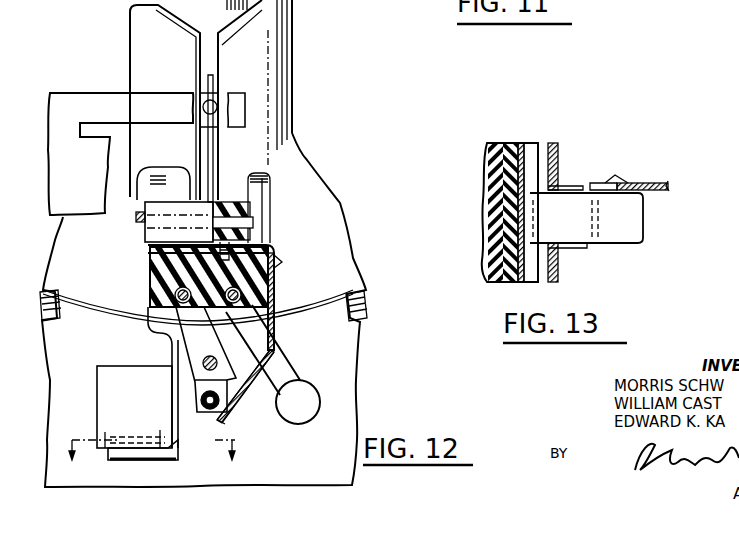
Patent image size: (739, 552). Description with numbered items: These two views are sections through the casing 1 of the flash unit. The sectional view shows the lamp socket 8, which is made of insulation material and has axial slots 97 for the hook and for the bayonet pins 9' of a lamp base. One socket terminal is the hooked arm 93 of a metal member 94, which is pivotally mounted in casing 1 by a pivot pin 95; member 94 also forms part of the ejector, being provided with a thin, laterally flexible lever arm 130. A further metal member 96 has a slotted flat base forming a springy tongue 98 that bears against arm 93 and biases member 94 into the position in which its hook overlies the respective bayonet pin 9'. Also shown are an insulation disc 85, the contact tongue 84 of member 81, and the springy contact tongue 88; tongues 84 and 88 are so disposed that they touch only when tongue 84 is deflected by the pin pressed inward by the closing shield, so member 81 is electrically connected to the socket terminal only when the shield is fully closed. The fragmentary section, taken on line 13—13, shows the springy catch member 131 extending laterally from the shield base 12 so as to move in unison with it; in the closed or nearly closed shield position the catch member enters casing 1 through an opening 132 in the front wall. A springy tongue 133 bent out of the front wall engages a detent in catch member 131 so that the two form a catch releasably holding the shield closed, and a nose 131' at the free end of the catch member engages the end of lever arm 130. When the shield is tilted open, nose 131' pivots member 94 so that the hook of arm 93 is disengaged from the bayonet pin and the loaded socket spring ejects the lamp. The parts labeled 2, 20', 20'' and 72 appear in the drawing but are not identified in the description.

In FIG. 13, the casing 1 is at (561, 162).
In FIG. 12, the housing body 2 is at (335, 252).
In FIG. 12, the lamp socket 8 is at (295, 91).
In FIG. 12, the bayonet pin 9' is at (263, 77).
In FIG. 13, the shield portion 12 is at (486, 180).
In FIG. 12, the layer / section line 13 is at (152, 439).
In FIG. 13, the layer / section line 13 is at (515, 145).
In FIG. 12, the fastener 20' is at (179, 277).
In FIG. 12, the fastener 20'' is at (277, 282).
In FIG. 12, the knob 72 is at (280, 375).
In FIG. 12, the metal member 81 is at (277, 279).
In FIG. 12, the contact tongue 84 is at (200, 402).
In FIG. 12, the insulation disc 85 is at (217, 398).
In FIG. 12, the springy contact tongue 88 is at (262, 362).
In FIG. 12, the hooked arm 93 is at (213, 163).
In FIG. 12, the metal member 94 is at (183, 203).
In FIG. 12, the pivot pin 95 is at (135, 221).
In FIG. 12, the metal member 96 is at (70, 88).
In FIG. 12, the axial slots 97 is at (212, 66).
In FIG. 12, the springy tongue 98 is at (152, 103).
In FIG. 12, the lever arm 130 is at (167, 348).
In FIG. 13, the lever arm 130 is at (650, 181).
In FIG. 12, the springy catch member 131 is at (143, 463).
In FIG. 13, the springy catch member 131 is at (618, 213).
In FIG. 13, the nose 131' is at (632, 160).
In FIG. 12, the opening 132 is at (110, 382).
In FIG. 13, the springy tongue 133 is at (573, 247).